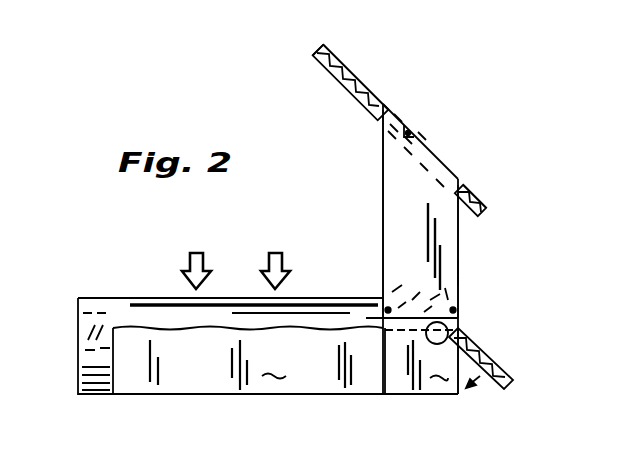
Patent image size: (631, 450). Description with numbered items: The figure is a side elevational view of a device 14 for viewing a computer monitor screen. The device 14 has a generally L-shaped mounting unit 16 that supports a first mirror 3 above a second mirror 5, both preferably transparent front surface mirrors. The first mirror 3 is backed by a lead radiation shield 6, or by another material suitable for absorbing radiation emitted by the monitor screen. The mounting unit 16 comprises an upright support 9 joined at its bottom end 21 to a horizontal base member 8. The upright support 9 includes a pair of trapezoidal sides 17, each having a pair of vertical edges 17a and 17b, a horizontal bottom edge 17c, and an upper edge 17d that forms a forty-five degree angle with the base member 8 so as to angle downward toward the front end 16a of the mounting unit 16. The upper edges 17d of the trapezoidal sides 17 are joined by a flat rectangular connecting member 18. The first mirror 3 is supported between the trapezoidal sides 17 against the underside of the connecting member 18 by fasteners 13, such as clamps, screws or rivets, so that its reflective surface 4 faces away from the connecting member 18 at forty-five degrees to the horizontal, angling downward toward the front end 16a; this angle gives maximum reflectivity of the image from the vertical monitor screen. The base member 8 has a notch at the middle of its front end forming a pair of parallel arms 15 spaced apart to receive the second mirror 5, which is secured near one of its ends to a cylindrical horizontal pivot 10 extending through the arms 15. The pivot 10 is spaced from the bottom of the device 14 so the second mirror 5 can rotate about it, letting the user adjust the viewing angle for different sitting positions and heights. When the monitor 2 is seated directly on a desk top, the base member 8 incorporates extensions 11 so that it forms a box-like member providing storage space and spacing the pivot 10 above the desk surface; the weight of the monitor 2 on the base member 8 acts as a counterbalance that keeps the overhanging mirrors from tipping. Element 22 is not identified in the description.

The monitor 2 is at (236, 260).
The first mirror 3 is at (313, 50).
The reflective surface 4 is at (336, 100).
The second mirror 5 is at (505, 372).
The lead radiation shield 6 is at (333, 60).
The horizontal base member 8 is at (123, 310).
The upright support 9 is at (418, 246).
The cylindrical horizontal pivot 10 is at (421, 361).
The extensions 11 is at (267, 346).
The fasteners 13 is at (420, 134).
The device 14 is at (485, 150).
The parallel arms 15 is at (410, 398).
The L-shaped mounting unit 16 is at (430, 400).
The front end 16a is at (482, 280).
The trapezoidal sides 17 is at (383, 228).
The vertical edge 17a is at (383, 180).
The vertical edge 17b is at (460, 252).
The horizontal bottom edge 17c is at (462, 338).
The upper edge 17d is at (408, 126).
The flat rectangular connecting member 18 is at (400, 110).
The bottom end 21 is at (462, 268).
The end block 22 is at (78, 313).